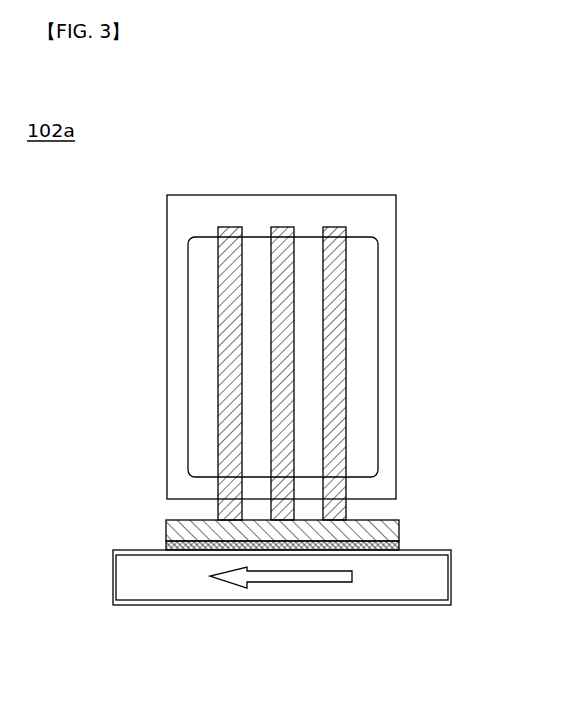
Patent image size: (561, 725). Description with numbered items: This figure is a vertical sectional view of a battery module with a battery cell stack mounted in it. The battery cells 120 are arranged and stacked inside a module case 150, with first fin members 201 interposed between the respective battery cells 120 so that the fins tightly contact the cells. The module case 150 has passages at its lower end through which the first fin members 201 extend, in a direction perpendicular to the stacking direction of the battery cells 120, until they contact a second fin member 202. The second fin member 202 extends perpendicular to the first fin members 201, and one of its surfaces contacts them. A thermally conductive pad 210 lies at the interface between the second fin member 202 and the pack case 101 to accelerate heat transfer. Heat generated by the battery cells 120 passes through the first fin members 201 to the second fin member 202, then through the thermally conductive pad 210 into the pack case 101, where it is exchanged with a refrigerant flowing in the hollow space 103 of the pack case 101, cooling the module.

The module case 150 is at (397, 292).
The battery cells 120 is at (188, 388).
The first fin members 201 is at (333, 227).
The second fin member 202 is at (400, 528).
The thermally conductive pad 210 is at (166, 547).
The pack case 101 is at (138, 605).
The hollow space 103 is at (380, 592).